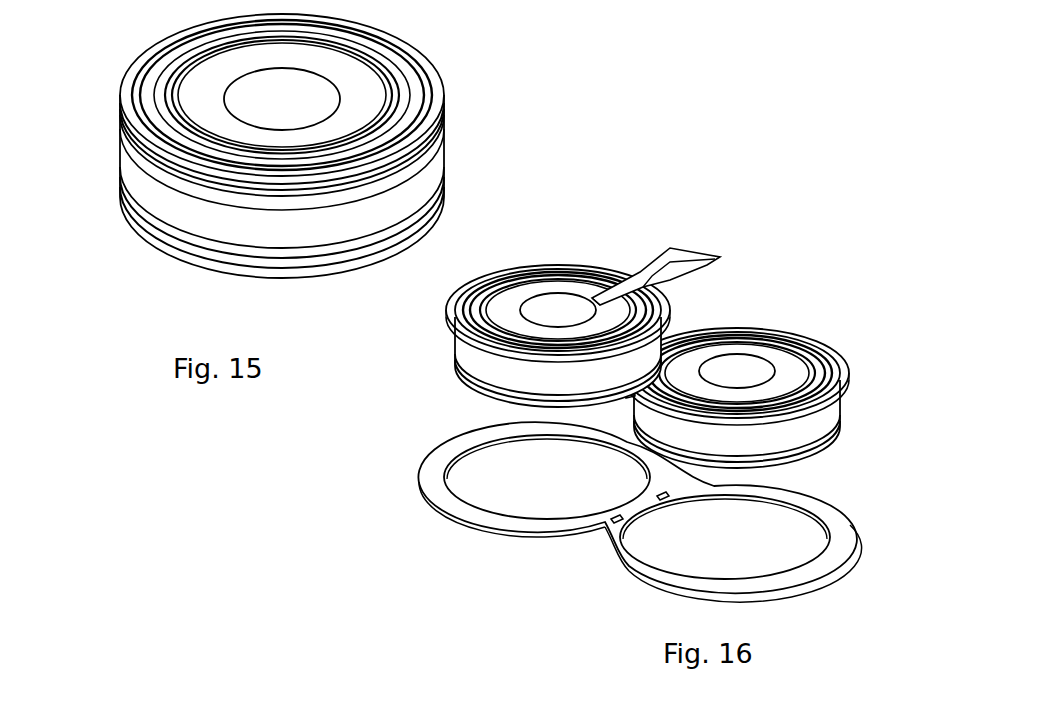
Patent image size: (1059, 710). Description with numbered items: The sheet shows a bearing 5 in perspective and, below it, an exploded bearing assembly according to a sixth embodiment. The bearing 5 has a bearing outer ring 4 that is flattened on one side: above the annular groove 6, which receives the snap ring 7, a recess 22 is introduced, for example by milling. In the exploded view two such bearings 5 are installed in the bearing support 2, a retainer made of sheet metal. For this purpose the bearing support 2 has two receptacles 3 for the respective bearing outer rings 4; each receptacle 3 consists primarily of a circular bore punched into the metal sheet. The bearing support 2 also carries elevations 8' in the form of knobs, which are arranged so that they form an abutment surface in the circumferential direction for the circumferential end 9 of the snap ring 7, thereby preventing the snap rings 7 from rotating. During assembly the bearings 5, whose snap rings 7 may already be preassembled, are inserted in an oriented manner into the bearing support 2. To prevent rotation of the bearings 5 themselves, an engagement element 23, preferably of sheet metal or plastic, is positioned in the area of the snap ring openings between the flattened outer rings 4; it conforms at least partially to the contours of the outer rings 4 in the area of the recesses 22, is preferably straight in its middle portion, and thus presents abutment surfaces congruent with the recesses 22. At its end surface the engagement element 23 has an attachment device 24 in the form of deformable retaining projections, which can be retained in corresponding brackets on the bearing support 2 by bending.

In FIG. 16, the bearing support 2 is at (477, 360).
In FIG. 16, the receptacle 3 is at (637, 507).
In FIG. 15, the bearing outer ring 4 is at (147, 185).
In FIG. 15, the bearing 5 is at (98, 63).
In FIG. 16, the bearing 5 is at (827, 415).
In FIG. 15, the annular groove 6 is at (273, 193).
In FIG. 16, the snap ring 7 is at (748, 333).
In FIG. 16, the elevation 8' is at (644, 522).
In FIG. 16, the circumferential end 9 is at (617, 396).
In FIG. 15, the recess 22 is at (418, 162).
In FIG. 16, the engagement element 23 is at (663, 272).
In FIG. 16, the attachment device 24 is at (590, 297).